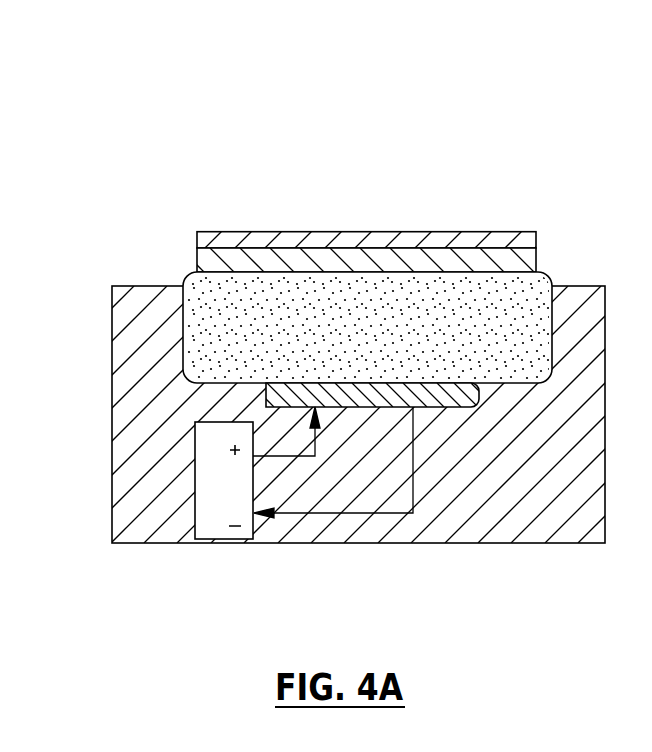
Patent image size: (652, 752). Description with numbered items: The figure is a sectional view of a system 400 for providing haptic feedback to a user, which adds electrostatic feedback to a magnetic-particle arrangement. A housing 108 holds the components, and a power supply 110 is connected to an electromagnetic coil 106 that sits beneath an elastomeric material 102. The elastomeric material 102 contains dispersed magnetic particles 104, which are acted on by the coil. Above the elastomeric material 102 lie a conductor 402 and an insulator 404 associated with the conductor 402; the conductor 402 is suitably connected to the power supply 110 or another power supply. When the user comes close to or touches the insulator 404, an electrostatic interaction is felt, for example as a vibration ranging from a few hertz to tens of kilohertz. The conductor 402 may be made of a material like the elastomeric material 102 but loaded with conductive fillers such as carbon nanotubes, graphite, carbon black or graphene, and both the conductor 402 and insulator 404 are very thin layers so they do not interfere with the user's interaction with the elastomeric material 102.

The system 400 is at (326, 344).
The elastomeric material 102 is at (182, 273).
The magnetic particles 104 is at (276, 307).
The electromagnetic coil 106 is at (270, 388).
The housing 108 is at (583, 325).
The power supply 110 is at (213, 515).
The conductor 402 is at (480, 262).
The insulator 404 is at (417, 242).